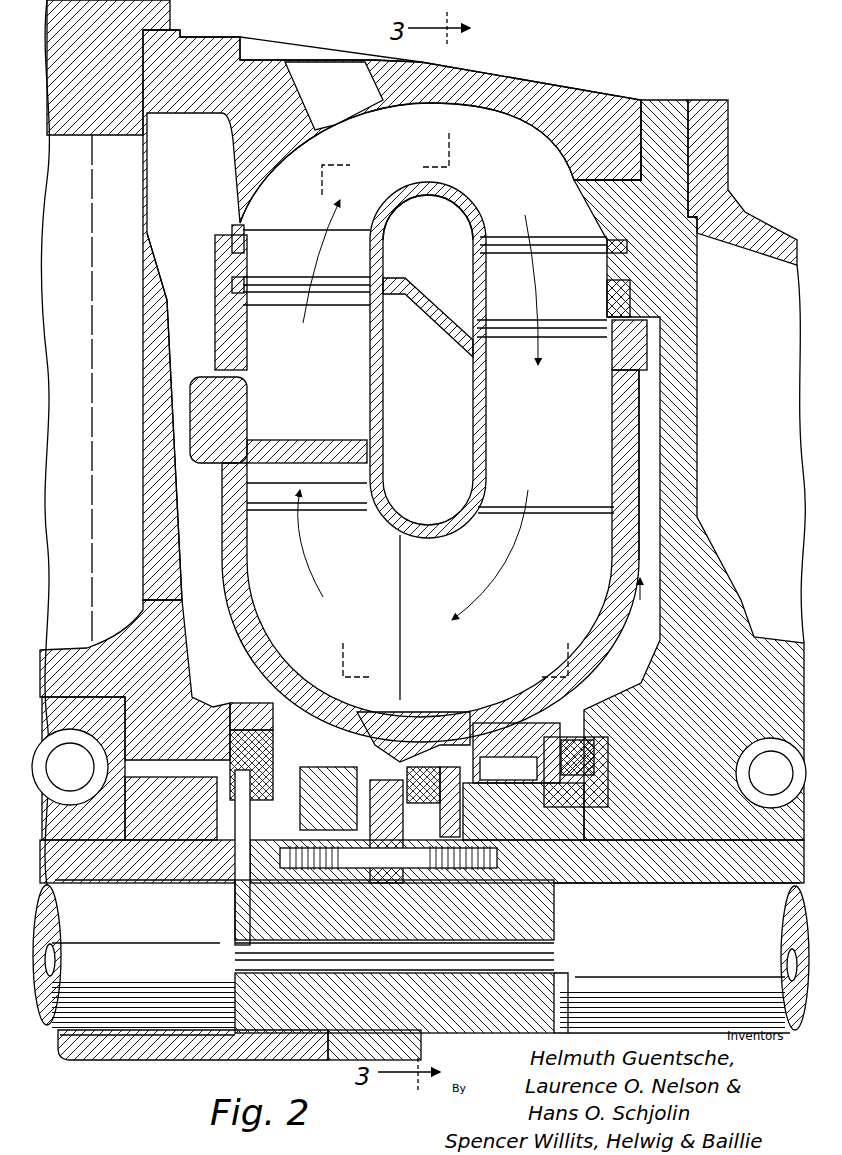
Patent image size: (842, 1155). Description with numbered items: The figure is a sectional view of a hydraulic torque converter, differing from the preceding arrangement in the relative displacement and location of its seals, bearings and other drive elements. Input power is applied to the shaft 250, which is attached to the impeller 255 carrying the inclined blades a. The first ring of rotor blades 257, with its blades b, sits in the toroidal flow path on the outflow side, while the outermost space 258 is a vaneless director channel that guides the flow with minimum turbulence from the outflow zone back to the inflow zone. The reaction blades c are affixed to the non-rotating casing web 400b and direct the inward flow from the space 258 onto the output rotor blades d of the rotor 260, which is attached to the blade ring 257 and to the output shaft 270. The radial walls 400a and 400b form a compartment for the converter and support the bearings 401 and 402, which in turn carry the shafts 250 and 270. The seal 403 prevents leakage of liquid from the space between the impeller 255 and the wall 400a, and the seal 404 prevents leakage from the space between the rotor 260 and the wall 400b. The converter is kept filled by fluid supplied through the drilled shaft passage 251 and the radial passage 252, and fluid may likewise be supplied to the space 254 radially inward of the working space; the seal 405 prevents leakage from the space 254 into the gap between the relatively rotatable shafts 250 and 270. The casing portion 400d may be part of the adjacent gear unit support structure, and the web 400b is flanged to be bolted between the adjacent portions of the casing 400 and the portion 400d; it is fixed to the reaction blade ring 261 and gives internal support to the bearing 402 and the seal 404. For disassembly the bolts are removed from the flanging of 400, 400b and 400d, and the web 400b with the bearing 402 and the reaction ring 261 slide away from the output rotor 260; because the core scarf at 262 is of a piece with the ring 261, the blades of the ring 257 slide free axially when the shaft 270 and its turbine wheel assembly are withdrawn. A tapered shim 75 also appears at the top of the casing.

The shim 75 is at (317, 73).
The casing 400 is at (583, 108).
The radial wall 400a is at (155, 352).
The casing web 400b is at (700, 352).
The casing portion 400d is at (745, 228).
The outermost space 258 is at (280, 193).
The core scarf 262 is at (470, 205).
The reaction blade ring 261 is at (628, 290).
The first ring of rotor blades 257 is at (222, 377).
The impeller 255 is at (230, 548).
The rotor 260 is at (625, 507).
The space 254 is at (385, 742).
The radial passage 252 is at (240, 905).
The drilled shaft passage 251 is at (250, 957).
The shaft 250 is at (160, 1060).
The shaft 270 is at (720, 868).
The bearing 401 is at (62, 710).
The bearing 402 is at (770, 715).
The seal 403 is at (240, 745).
The seal 404 is at (564, 747).
The seal 405 is at (418, 790).
The impeller blades a is at (270, 483).
The first rotor blades b is at (258, 245).
The reaction blades c is at (596, 295).
The output rotor blades d is at (600, 430).